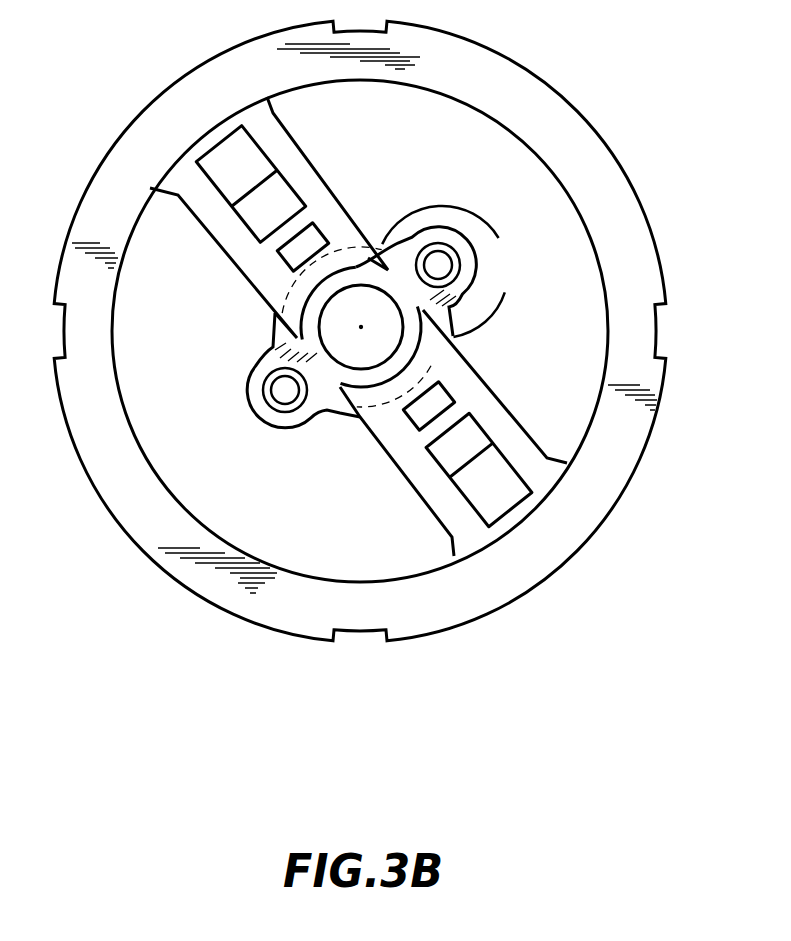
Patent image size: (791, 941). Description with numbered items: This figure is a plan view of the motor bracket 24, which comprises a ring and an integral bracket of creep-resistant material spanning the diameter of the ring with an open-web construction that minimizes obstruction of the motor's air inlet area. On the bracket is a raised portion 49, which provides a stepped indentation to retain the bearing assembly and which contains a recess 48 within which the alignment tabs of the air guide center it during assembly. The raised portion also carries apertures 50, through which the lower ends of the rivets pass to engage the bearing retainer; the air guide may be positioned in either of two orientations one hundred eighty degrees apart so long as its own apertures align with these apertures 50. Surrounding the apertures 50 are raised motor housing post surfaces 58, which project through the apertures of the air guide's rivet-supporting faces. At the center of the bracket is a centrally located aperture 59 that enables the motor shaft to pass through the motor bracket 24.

The motor bracket 24 is at (604, 528).
The recess 48 is at (450, 271).
The raised portion 49 is at (357, 418).
The apertures 50 is at (285, 391).
The raised motor housing post surfaces 58 is at (268, 378).
The centrally located aperture 59 is at (346, 346).